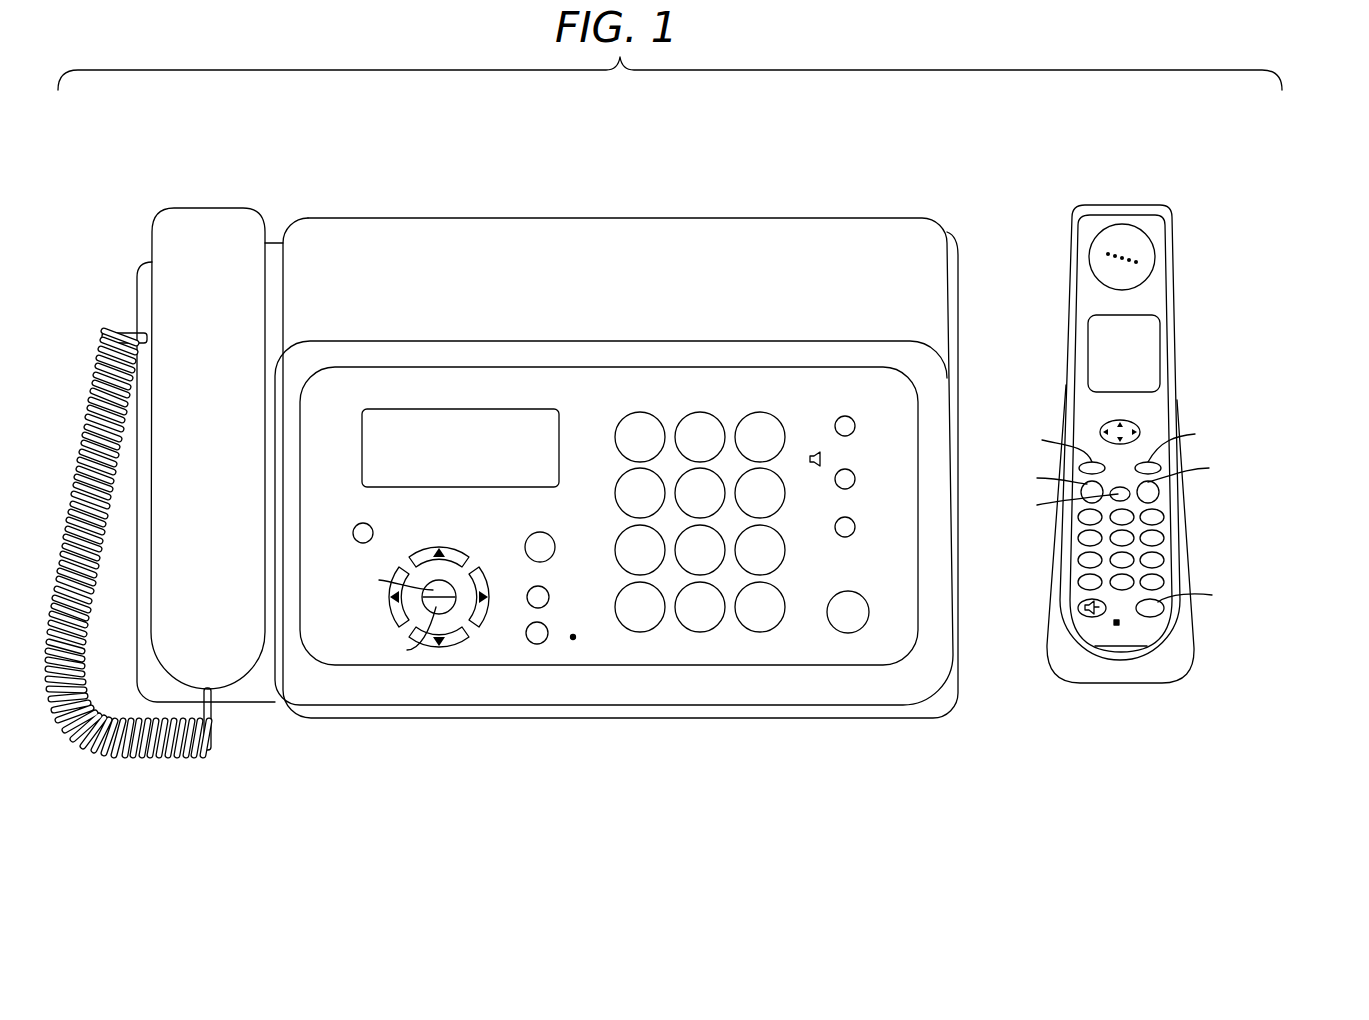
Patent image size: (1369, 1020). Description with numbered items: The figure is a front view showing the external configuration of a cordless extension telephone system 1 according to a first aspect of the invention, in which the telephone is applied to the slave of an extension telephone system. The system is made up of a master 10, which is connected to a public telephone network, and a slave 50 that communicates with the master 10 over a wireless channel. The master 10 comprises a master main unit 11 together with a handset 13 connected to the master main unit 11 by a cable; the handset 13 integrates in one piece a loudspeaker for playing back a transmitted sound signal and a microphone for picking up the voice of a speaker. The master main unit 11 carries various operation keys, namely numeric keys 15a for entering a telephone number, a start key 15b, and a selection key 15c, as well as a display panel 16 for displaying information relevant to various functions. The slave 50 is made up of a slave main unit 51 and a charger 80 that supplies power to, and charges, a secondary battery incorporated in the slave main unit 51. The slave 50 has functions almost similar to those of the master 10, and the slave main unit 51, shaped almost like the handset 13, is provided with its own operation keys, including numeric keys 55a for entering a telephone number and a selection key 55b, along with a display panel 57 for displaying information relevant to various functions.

The cordless extension telephone system 1 is at (798, 200).
The master 10 is at (577, 726).
The master main unit 11 is at (590, 237).
The handset 13 is at (218, 211).
The numeric keys 15a is at (718, 623).
The start key 15b is at (855, 623).
The selection key 15c is at (460, 640).
The display panel 16 is at (437, 422).
The slave 50 is at (1128, 200).
The slave main unit 51 is at (1162, 295).
The numeric keys 55a is at (1120, 592).
The selection key 55b is at (1140, 427).
The display panel 57 is at (1148, 348).
The charger 80 is at (1180, 648).